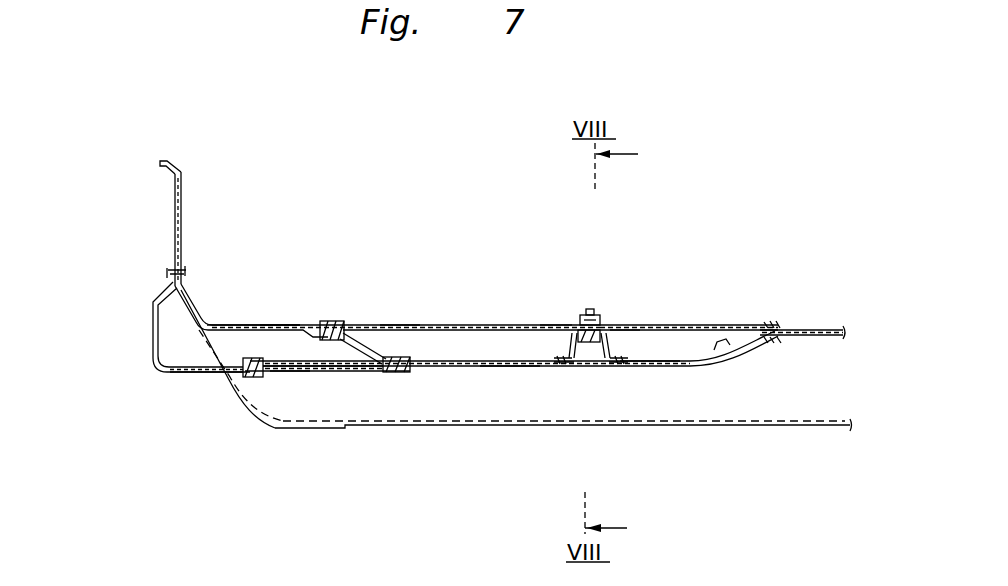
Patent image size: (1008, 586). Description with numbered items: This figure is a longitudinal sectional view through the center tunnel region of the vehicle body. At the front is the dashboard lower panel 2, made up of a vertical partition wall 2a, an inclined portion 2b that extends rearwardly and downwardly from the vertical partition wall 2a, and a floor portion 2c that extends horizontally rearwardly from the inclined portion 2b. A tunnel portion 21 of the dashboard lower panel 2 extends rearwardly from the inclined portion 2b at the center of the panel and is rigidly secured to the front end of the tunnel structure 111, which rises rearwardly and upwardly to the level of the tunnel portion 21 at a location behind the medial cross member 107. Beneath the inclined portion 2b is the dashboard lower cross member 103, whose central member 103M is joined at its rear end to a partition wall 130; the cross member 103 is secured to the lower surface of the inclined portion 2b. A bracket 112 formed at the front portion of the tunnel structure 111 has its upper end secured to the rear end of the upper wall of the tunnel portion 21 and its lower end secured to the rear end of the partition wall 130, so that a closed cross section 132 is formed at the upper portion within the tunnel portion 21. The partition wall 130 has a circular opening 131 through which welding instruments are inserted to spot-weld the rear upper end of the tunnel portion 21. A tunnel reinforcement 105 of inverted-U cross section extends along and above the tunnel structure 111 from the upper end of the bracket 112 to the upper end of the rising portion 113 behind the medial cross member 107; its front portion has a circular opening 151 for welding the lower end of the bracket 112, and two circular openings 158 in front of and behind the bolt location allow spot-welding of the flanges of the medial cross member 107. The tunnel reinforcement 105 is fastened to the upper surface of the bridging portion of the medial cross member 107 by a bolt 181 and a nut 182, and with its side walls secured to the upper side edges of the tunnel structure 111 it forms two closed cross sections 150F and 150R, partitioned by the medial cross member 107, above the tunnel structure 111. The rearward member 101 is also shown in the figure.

The dashboard lower panel 2 is at (170, 218).
The vertical partition wall 2a is at (172, 183).
The inclined portion 2b is at (238, 400).
The floor portion 2c is at (298, 430).
The tunnel portion 21 is at (282, 326).
The rear rail member 101 is at (808, 320).
The dashboard lower cross member 103 is at (148, 353).
The central member 103M is at (184, 373).
The tunnel reinforcement 105 is at (443, 320).
The medial cross member 107 is at (624, 341).
The tunnel structure 111 is at (513, 366).
The bracket 112 is at (375, 353).
The rising portion 113 is at (729, 343).
The partition wall 130 is at (293, 373).
The circular opening 131 is at (333, 368).
The closed cross section 132 is at (249, 343).
The front closed cross section 150F is at (477, 337).
The rear closed cross section 150R is at (687, 343).
The circular opening 151 is at (398, 324).
The circular openings 158 is at (551, 326).
The bolt 181 is at (583, 344).
The nut 182 is at (603, 314).